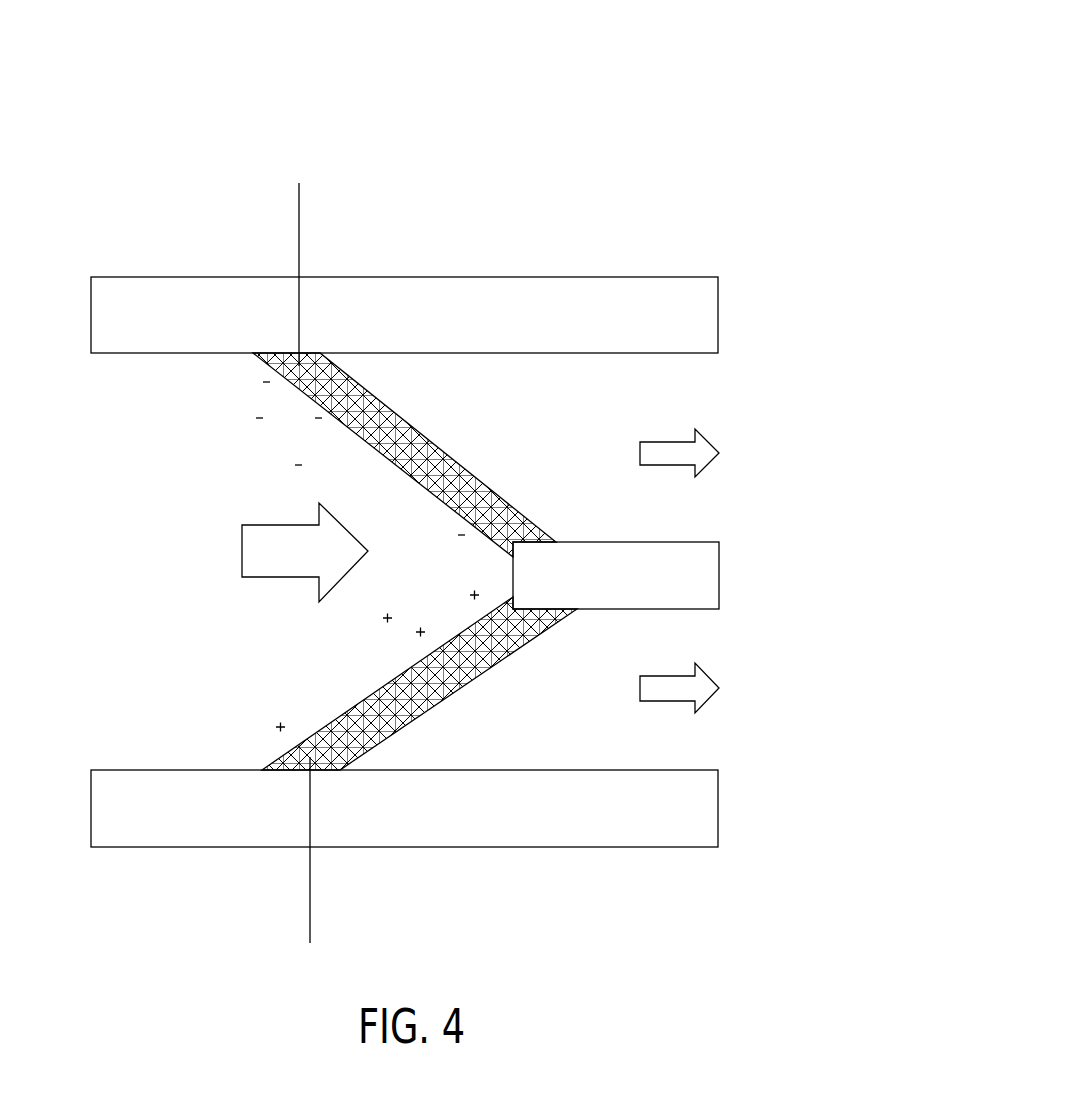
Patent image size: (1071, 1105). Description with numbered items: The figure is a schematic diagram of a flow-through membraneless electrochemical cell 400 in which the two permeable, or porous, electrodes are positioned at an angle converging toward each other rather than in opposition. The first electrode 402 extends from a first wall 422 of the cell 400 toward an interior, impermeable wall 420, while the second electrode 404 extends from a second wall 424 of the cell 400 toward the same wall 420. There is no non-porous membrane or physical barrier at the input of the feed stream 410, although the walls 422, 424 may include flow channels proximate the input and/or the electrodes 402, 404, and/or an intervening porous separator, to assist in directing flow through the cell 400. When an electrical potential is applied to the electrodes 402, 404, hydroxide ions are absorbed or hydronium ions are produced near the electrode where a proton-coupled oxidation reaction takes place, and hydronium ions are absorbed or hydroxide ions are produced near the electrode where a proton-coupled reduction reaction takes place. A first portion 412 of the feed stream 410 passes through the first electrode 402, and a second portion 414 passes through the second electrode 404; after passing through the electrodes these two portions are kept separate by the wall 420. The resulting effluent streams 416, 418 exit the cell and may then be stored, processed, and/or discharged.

The flow-through membraneless electrochemical cell 400 is at (650, 105).
The first electrode 402 is at (392, 691).
The second electrode 404 is at (392, 458).
The feed stream 410 is at (242, 556).
The first portion of the feed stream 412 is at (206, 715).
The second portion of the feed stream 414 is at (206, 391).
The effluent stream 416 is at (645, 688).
The effluent stream 418 is at (645, 453).
The interior impermeable wall 420 is at (707, 578).
The first wall 422 is at (500, 834).
The second wall 424 is at (500, 290).